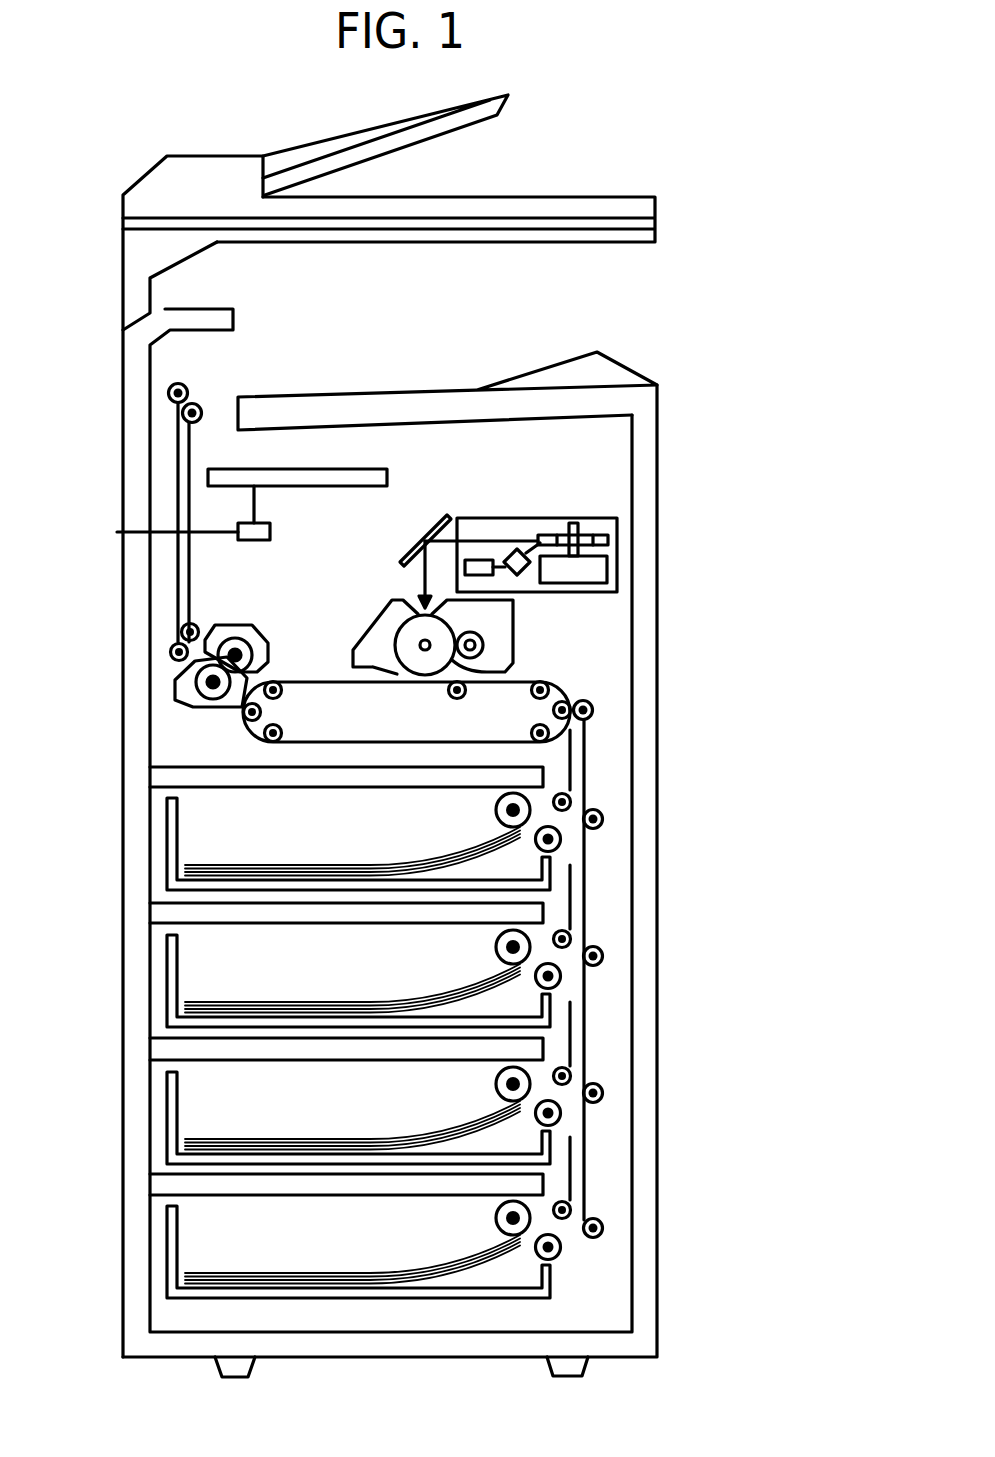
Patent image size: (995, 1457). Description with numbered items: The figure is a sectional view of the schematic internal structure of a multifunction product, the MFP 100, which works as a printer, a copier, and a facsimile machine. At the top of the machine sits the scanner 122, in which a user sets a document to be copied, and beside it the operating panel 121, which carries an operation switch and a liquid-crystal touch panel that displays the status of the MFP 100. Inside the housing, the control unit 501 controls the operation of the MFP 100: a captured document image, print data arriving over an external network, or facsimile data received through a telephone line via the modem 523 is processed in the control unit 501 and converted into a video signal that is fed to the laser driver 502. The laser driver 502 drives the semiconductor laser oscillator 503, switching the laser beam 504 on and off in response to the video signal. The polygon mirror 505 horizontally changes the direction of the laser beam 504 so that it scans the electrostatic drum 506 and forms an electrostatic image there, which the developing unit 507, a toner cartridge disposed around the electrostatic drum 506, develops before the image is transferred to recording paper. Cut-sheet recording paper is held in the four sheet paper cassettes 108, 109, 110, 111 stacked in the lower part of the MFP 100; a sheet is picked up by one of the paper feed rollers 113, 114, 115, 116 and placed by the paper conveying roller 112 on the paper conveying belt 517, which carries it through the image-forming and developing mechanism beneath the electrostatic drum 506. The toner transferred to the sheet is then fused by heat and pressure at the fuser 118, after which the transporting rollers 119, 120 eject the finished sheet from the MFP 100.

The MFP 100 is at (657, 543).
The sheet paper cassette 108 is at (185, 828).
The sheet paper cassette 109 is at (185, 968).
The sheet paper cassette 110 is at (185, 1104).
The sheet paper cassette 111 is at (185, 1240).
The paper conveying roller 112 is at (593, 709).
The paper feed roller 113 is at (603, 818).
The paper feed roller 114 is at (603, 955).
The paper feed roller 115 is at (603, 1092).
The paper feed roller 116 is at (603, 1227).
The fuser 118 is at (177, 685).
The transporting roller 119 is at (172, 647).
The transporting roller 120 is at (186, 387).
The operating panel 121 is at (617, 362).
The scanner 122 is at (657, 205).
The control unit 501 is at (350, 468).
The laser driver 502 is at (478, 560).
The semiconductor laser oscillator 503 is at (527, 575).
The laser beam 504 is at (517, 549).
The polygon mirror 505 is at (560, 535).
The electrostatic drum 506 is at (392, 608).
The developing unit 507 is at (513, 633).
The paper conveying belt 517 is at (320, 682).
The modem 523 is at (270, 532).